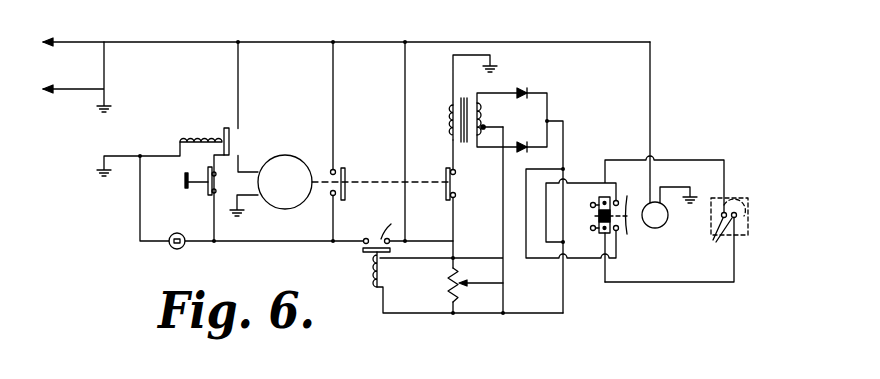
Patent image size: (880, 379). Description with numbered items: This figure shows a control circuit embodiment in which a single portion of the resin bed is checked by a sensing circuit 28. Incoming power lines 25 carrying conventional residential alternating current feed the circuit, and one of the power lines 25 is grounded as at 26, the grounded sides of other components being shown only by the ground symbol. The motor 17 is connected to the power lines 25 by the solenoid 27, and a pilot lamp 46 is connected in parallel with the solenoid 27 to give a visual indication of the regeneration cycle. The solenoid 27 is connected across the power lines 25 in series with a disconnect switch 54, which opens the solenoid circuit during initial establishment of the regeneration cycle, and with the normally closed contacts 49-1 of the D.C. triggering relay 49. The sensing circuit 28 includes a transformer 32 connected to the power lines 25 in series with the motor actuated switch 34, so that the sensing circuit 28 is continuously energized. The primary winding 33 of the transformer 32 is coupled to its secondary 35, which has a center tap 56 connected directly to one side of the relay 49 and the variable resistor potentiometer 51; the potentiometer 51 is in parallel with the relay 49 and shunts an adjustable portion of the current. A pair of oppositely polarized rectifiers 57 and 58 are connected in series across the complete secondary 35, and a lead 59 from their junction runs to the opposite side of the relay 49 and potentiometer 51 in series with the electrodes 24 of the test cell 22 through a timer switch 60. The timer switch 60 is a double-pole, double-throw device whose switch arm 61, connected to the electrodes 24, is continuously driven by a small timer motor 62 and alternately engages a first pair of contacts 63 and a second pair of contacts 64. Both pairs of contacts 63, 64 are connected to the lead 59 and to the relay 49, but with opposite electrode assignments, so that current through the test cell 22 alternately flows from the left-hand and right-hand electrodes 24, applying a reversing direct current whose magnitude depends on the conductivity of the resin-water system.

The motor 17 is at (285, 169).
The test cell 22 is at (744, 214).
The electrodes 24 is at (717, 239).
The power lines 25 is at (346, 60).
The ground 26 is at (95, 77).
The solenoid 27 is at (204, 125).
The sensing circuit 28 is at (669, 265).
The transformer 32 is at (469, 106).
The primary winding 33 is at (434, 122).
The motor actuated switch 34 is at (399, 184).
The secondary 35 is at (495, 118).
The pilot lamp 46 is at (193, 249).
The triggering relay 49 is at (356, 267).
The normally closed contacts 49-1 is at (377, 225).
The variable resistor 51 is at (456, 285).
The switch 54 is at (187, 190).
The center tap 56 is at (508, 122).
The rectifier 57 is at (535, 81).
The rectifier 58 is at (532, 154).
The lead 59 is at (574, 215).
The timer switch 60 is at (642, 229).
The switch arm 61 is at (591, 256).
The first pair of contacts 63 is at (589, 215).
The second pair of contacts 64 is at (629, 192).
The timer motor 62 is at (669, 218).